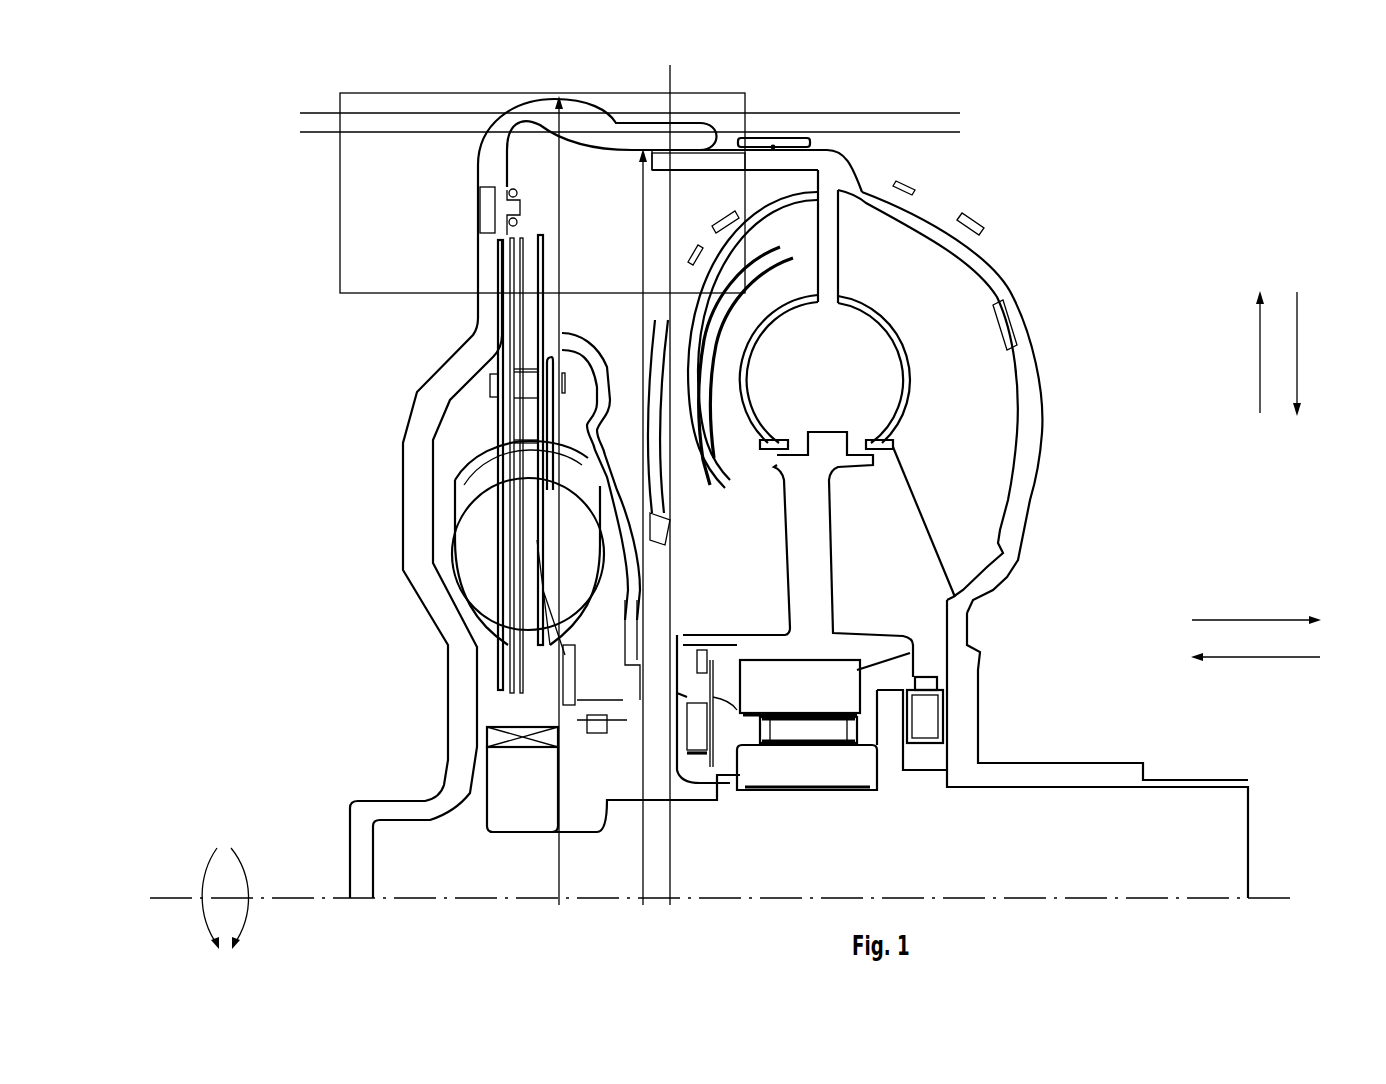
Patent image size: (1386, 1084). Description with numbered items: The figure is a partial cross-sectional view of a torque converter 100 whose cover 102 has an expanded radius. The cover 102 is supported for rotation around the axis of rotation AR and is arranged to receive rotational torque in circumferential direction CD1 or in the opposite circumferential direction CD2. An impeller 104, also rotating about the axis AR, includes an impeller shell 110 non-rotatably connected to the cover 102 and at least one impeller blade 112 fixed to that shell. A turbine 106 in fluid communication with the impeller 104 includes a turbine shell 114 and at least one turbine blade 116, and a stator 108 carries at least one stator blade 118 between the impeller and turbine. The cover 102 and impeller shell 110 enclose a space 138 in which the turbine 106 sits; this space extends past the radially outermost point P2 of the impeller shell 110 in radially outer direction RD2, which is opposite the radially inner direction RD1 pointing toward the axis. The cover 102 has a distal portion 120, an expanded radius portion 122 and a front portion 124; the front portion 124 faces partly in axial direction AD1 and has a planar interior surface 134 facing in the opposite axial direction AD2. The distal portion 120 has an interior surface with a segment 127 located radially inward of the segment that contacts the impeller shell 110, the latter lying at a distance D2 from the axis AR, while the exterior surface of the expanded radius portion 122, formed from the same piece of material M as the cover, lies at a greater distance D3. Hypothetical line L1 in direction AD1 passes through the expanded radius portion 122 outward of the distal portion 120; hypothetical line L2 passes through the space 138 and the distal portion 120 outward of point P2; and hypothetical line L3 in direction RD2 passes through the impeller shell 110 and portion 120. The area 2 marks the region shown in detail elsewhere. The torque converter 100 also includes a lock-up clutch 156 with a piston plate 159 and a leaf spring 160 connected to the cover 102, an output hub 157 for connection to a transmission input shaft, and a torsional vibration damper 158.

The area 2 is at (340, 158).
The torque converter 100 is at (1130, 133).
The cover 102 is at (366, 470).
The impeller 104 is at (1022, 275).
The turbine 106 is at (762, 190).
The stator 108 is at (842, 549).
The impeller shell 110 is at (1040, 377).
The impeller blade 112 is at (975, 404).
The turbine shell 114 is at (795, 238).
The turbine blade 116 is at (800, 238).
The stator blade 118 is at (807, 502).
The distal portion 120 is at (685, 123).
The expanded radius portion 122 is at (540, 99).
The front portion 124 is at (486, 332).
The segment 127 is at (625, 152).
The planar interior surface 134 is at (473, 162).
The space 138 is at (583, 223).
The lock-up clutch 156 is at (472, 323).
The output hub 157 is at (513, 777).
The torsional vibration damper 158 is at (466, 438).
The piston plate 159 is at (527, 240).
The leaf spring 160 is at (512, 187).
The hypothetical line L1 is at (898, 113).
The hypothetical line L2 is at (927, 134).
The hypothetical line L3 is at (677, 877).
The radially outermost point P2 is at (773, 145).
The material M is at (468, 703).
The axis of rotation AR is at (1143, 898).
The radially inner direction RD1 is at (1300, 357).
The radially outer direction RD2 is at (1258, 377).
The axial direction AD1 is at (1248, 657).
The axial direction AD2 is at (1228, 620).
The circumferential direction CD1 is at (247, 923).
The circumferential direction CD2 is at (207, 882).
The distance/outer radius D3 is at (563, 877).
The distance/inner radius D2 is at (640, 877).